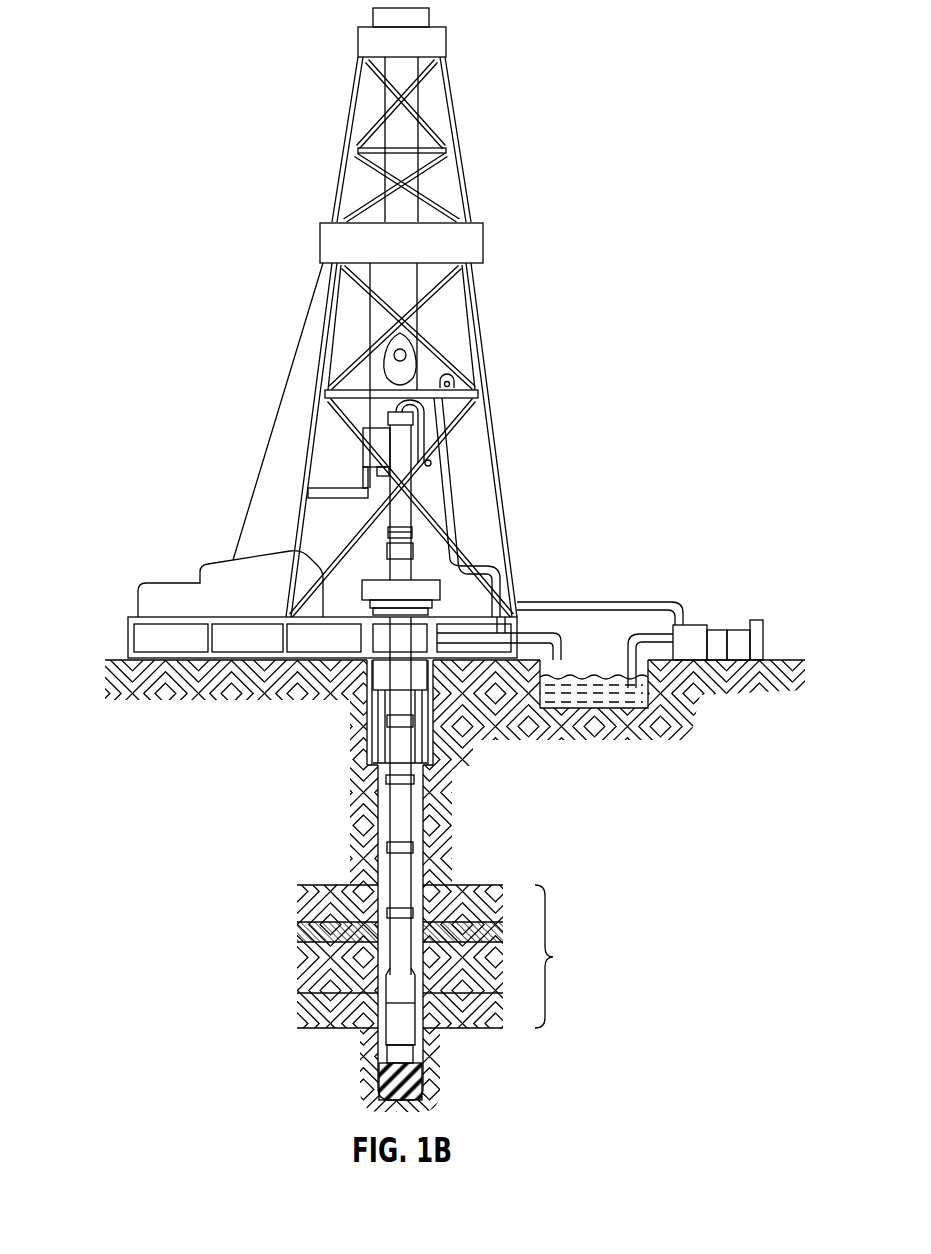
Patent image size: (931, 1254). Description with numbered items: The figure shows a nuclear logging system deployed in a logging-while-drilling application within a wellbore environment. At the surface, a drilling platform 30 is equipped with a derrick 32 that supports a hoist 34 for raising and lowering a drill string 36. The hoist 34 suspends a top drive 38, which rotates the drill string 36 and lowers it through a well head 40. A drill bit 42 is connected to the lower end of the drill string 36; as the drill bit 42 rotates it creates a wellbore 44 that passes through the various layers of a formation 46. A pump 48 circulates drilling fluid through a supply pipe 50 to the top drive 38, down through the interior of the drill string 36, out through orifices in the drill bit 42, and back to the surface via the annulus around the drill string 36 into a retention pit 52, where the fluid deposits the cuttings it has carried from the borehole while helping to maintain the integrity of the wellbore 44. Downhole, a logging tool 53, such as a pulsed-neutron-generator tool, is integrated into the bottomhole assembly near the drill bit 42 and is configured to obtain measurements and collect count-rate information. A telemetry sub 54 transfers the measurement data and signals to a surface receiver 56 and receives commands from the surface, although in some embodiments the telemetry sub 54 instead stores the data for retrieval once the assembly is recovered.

The drilling platform 30 is at (128, 640).
The derrick 32 is at (452, 128).
The hoist 34 is at (398, 357).
The drill string 36 is at (403, 810).
The top drive 38 is at (397, 453).
The well head 40 is at (425, 580).
The drill bit 42 is at (430, 1082).
The wellbore 44 is at (432, 838).
The formation 46 is at (447, 956).
The pump 48 is at (695, 625).
The supply pipe 50 is at (650, 598).
The retention pit 52 is at (622, 706).
The logging tool 53 is at (398, 990).
The telemetry sub 54 is at (397, 1032).
The surface receiver 56 is at (408, 530).